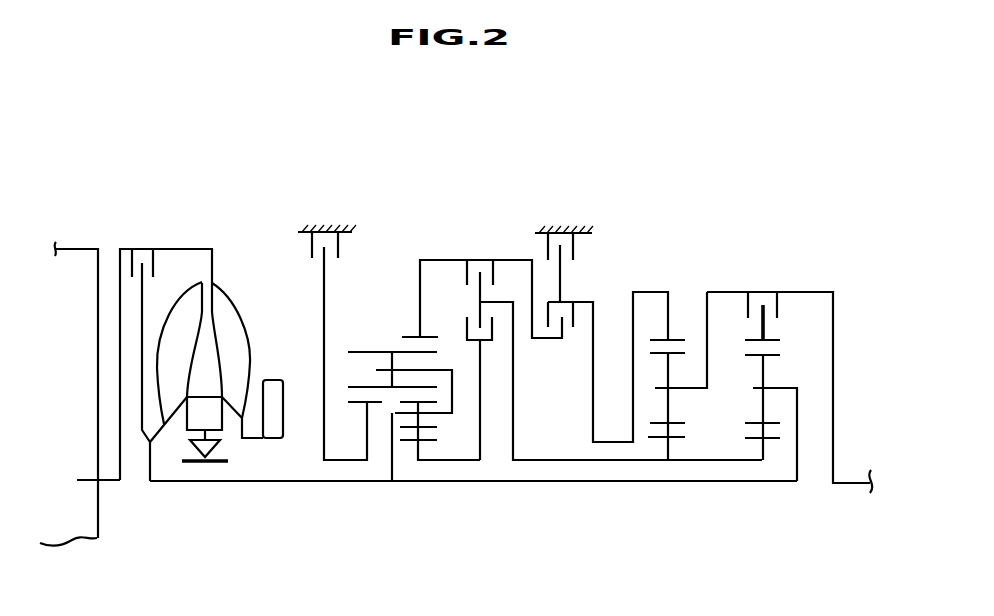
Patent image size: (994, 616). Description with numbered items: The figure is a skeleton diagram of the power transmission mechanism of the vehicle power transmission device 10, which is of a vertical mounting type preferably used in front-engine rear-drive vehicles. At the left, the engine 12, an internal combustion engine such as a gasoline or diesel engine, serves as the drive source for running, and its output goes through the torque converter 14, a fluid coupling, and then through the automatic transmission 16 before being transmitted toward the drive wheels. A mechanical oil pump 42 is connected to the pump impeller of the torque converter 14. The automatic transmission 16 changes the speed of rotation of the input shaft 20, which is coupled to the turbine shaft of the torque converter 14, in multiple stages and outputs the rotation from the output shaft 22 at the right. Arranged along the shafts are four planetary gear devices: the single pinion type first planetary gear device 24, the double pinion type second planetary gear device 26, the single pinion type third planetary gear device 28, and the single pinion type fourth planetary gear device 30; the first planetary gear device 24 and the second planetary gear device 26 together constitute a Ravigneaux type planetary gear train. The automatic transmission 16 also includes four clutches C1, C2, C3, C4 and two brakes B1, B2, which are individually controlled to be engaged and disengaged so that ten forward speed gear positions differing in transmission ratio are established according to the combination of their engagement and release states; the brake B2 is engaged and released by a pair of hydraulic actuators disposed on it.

The vehicle power transmission device 10 is at (599, 151).
The engine 12 is at (73, 262).
The torque converter 14 is at (225, 255).
The automatic transmission 16 is at (699, 204).
The input shaft 20 is at (245, 483).
The output shaft 22 is at (845, 490).
The first planetary gear device 24 is at (357, 502).
The second planetary gear device 26 is at (419, 502).
The third planetary gear device 28 is at (667, 502).
The fourth planetary gear device 30 is at (763, 502).
The mechanical oil pump 42 is at (273, 381).
The brake B1 is at (332, 329).
The brake B2 is at (564, 250).
The clutch C1 is at (591, 347).
The clutch C2 is at (463, 383).
The clutch C3 is at (608, 359).
The clutch C4 is at (762, 302).